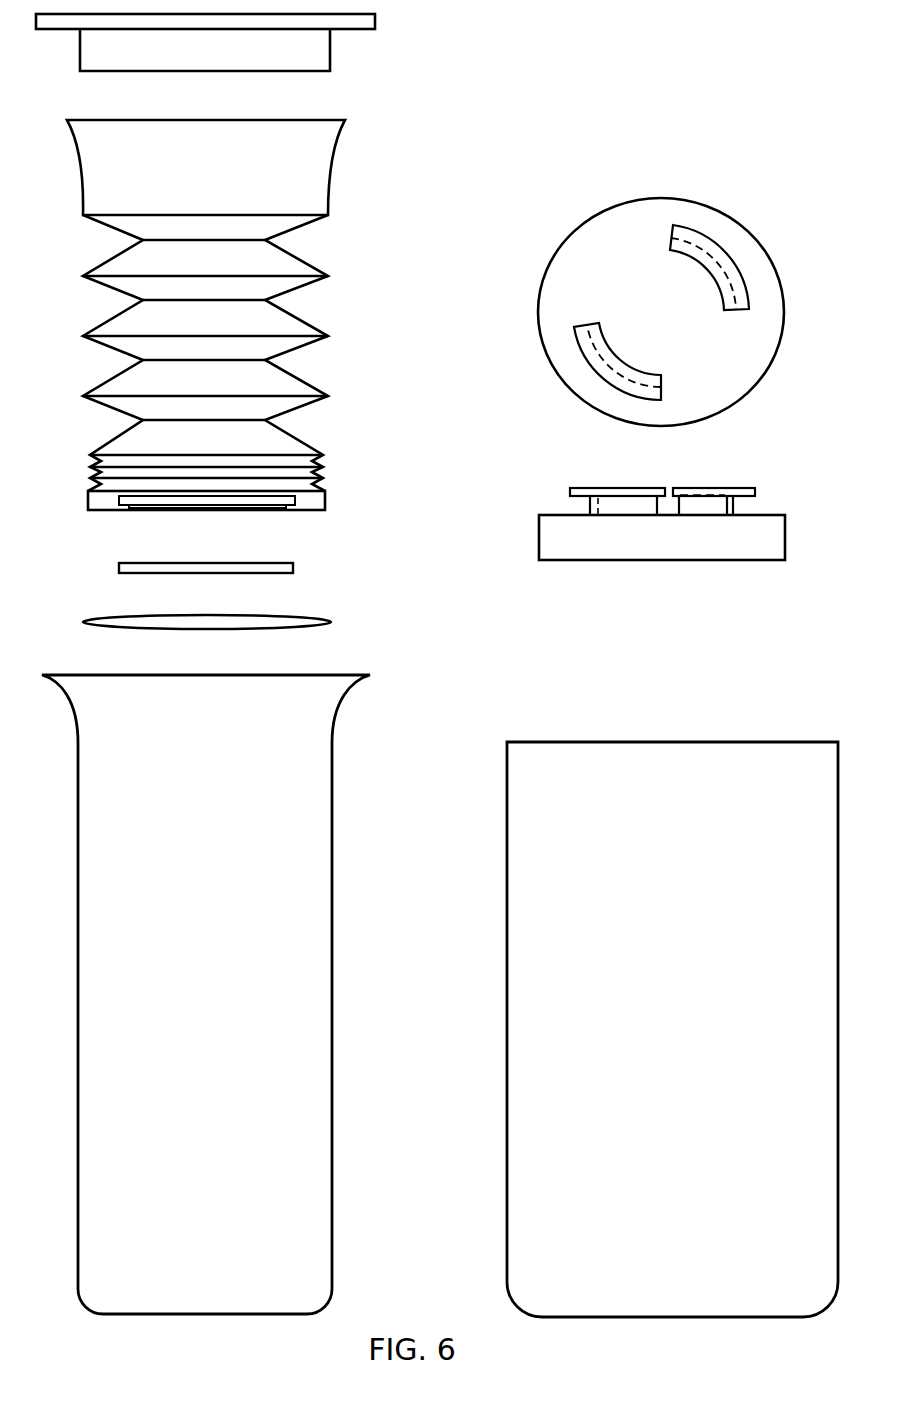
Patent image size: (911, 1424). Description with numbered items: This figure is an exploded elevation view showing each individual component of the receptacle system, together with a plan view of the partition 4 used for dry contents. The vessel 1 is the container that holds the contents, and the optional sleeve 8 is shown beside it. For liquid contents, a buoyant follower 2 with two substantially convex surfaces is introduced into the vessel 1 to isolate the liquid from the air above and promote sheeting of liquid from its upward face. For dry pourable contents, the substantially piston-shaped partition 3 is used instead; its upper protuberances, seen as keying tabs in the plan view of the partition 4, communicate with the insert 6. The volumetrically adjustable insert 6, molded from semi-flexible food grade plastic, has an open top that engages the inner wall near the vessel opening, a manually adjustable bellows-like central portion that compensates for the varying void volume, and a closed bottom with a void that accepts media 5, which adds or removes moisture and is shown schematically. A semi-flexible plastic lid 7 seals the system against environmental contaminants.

The vessel 1 is at (322, 870).
The follower 2 is at (285, 620).
The partition 3 is at (539, 532).
The partition 4 is at (588, 392).
The media 5 is at (277, 565).
The insert 6 is at (273, 307).
The lid 7 is at (310, 60).
The sleeve 8 is at (518, 1063).